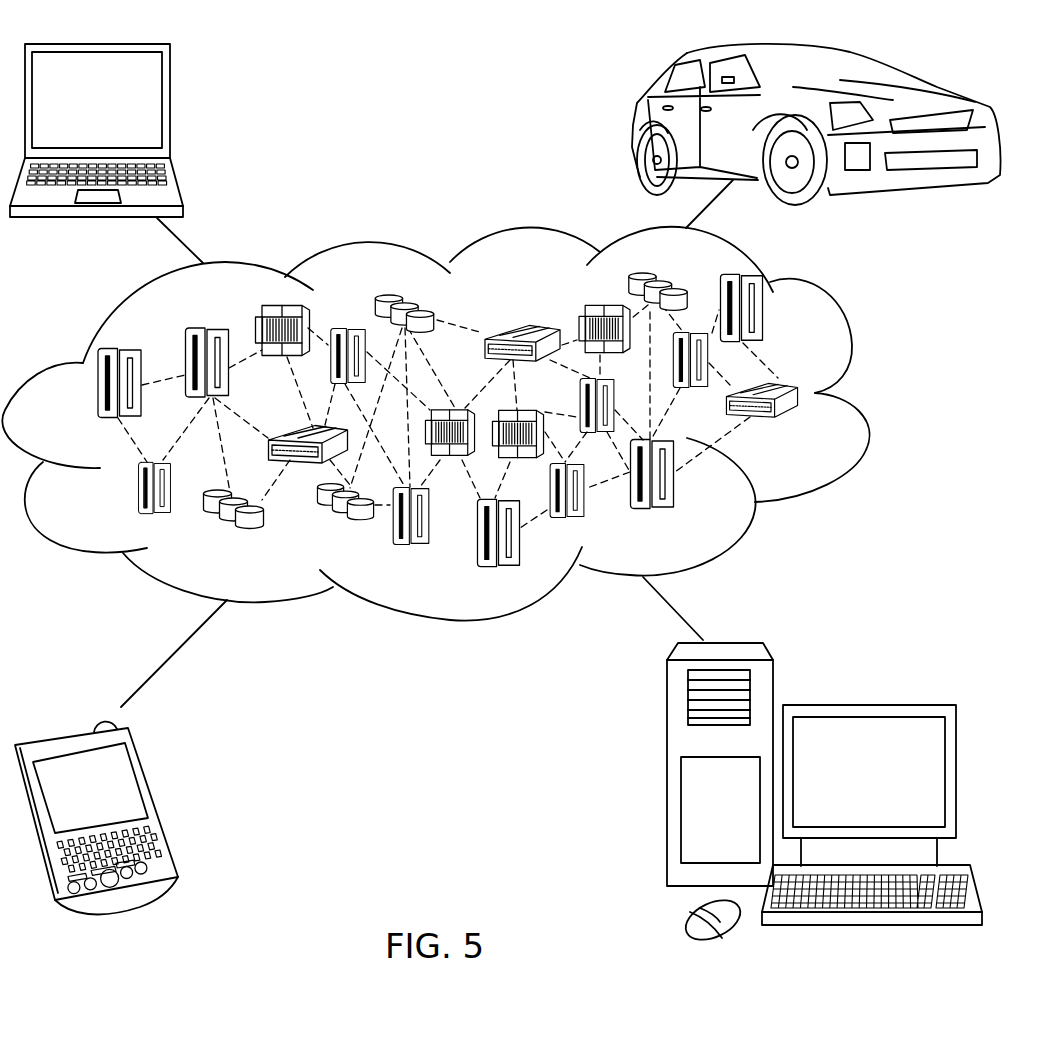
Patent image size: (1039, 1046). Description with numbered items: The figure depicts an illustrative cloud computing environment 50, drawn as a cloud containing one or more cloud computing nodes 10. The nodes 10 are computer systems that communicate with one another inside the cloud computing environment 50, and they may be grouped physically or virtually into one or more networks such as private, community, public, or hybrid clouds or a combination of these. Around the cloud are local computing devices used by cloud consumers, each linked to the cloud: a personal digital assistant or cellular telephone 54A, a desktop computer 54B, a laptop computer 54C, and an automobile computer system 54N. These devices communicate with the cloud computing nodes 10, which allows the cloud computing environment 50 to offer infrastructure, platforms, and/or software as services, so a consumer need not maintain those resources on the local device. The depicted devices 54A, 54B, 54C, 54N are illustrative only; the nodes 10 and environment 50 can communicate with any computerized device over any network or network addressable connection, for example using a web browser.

The cloud computing node 10 is at (815, 435).
The cloud computing environment 50 is at (868, 400).
The personal digital assistant (PDA) or cellular telephone 54A is at (160, 803).
The desktop computer 54B is at (867, 705).
The laptop computer 54C is at (170, 108).
The automobile computer system 54N is at (632, 127).